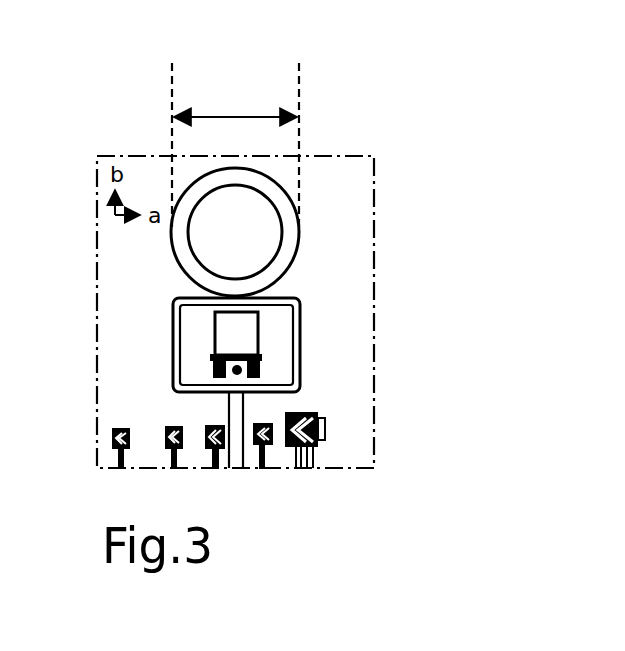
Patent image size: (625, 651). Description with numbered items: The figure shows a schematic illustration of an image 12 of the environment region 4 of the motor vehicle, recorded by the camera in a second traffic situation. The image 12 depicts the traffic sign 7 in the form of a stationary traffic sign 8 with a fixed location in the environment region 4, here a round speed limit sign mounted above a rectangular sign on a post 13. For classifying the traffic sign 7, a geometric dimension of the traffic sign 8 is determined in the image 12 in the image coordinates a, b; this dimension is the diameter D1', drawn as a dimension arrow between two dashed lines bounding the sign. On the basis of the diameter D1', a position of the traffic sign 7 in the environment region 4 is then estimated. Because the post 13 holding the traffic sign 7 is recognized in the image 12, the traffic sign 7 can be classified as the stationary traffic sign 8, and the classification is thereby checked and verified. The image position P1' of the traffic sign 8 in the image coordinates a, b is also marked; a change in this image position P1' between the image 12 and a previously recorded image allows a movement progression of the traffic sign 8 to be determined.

The environment region 4 is at (337, 277).
The traffic sign 7 is at (312, 181).
The stationary traffic sign 8 is at (190, 187).
The image 12 is at (318, 156).
The post 13 is at (243, 410).
The diameter D1' is at (235, 62).
The image position P1' is at (374, 235).